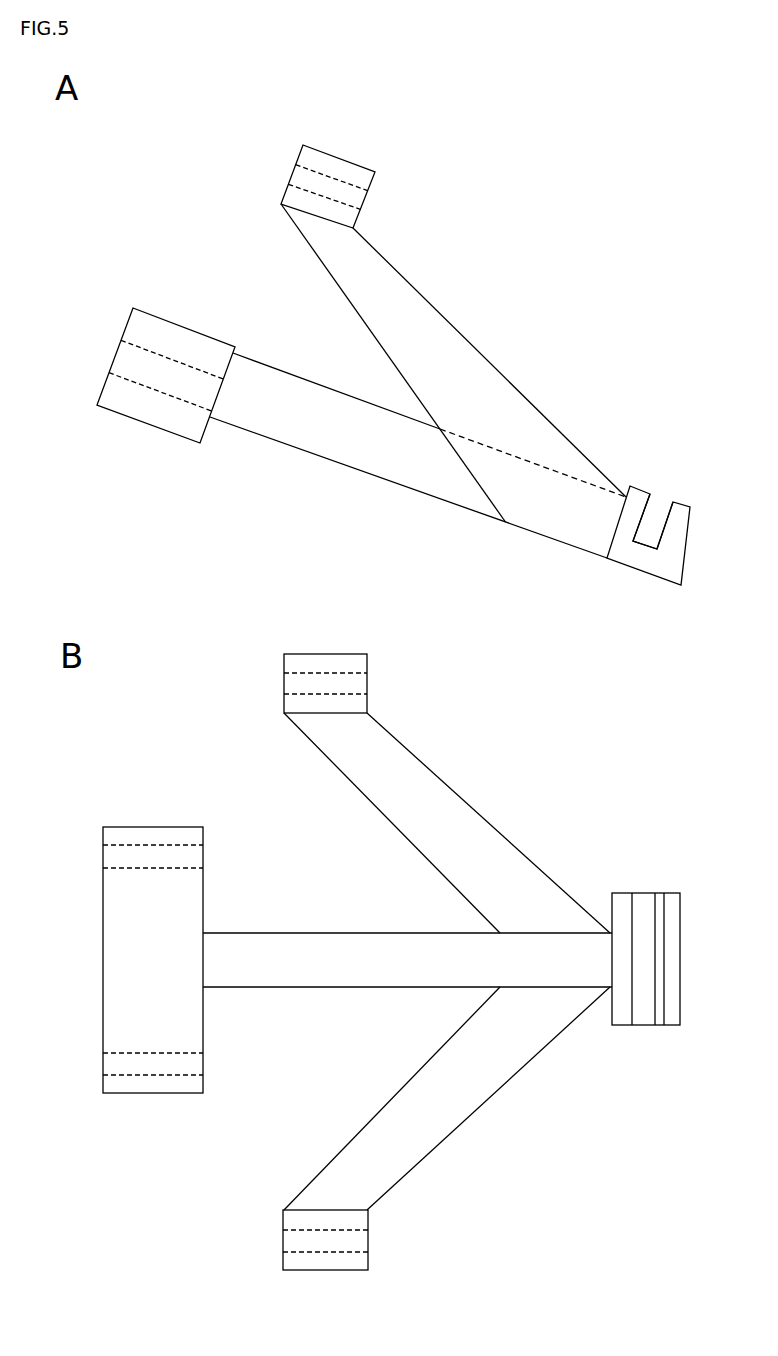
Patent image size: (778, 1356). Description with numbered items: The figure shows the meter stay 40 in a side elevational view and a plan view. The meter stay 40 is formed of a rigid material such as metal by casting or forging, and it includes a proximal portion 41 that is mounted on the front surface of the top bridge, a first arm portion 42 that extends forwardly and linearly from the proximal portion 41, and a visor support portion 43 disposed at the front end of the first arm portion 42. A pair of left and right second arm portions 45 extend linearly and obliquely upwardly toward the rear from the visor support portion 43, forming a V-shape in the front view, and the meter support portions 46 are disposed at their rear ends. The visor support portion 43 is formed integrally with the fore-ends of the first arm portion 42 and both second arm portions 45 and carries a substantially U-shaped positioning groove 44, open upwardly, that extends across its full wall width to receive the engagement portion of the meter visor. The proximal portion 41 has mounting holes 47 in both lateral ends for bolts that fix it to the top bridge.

The meter stay 40 is at (572, 395).
The proximal portion 41 is at (165, 322).
The first arm portion 42 is at (342, 443).
The visor support portion 43 is at (632, 560).
The positioning groove 44 is at (645, 543).
The second arm portions 45 is at (478, 348).
The meter support portions 46 is at (352, 157).
The mounting holes 47 is at (148, 377).